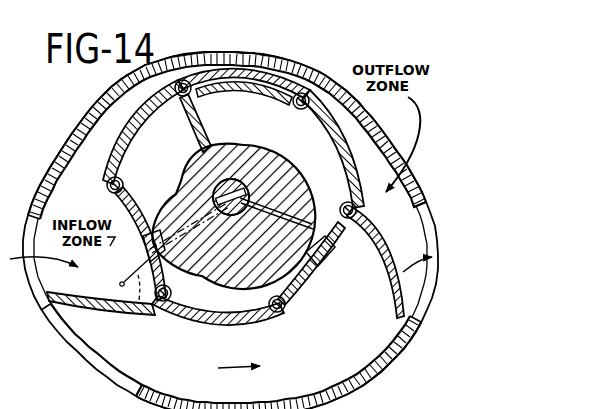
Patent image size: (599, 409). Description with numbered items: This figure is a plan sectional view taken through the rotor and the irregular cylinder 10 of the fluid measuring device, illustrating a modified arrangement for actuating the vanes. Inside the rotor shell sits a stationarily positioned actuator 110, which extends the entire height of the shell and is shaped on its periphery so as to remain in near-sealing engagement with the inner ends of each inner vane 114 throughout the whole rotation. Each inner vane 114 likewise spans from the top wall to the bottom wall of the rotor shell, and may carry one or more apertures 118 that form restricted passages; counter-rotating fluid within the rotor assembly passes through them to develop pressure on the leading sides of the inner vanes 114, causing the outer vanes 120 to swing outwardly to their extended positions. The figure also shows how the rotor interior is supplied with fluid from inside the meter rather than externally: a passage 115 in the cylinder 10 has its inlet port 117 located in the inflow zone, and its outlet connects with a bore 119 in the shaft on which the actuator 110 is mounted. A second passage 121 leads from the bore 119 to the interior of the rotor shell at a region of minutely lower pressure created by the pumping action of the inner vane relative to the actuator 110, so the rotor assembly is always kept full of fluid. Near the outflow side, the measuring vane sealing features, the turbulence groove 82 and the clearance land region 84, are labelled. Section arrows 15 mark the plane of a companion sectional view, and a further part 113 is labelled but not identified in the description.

The irregular cylinder 10 is at (219, 230).
The section line 15- 15 is at (166, 228).
The turbulence groove 82 is at (379, 408).
The clearance land region 84 is at (421, 408).
The stationarily positioned actuator 110 is at (285, 186).
The stator liner band 113 is at (394, 302).
The inner vane 114 is at (190, 133).
The passage 115 is at (132, 290).
The inlet port 117 is at (119, 284).
The aperture 118 is at (137, 257).
The bore 119 is at (254, 170).
The outer vane 120 is at (103, 298).
The second passage 121 is at (308, 212).